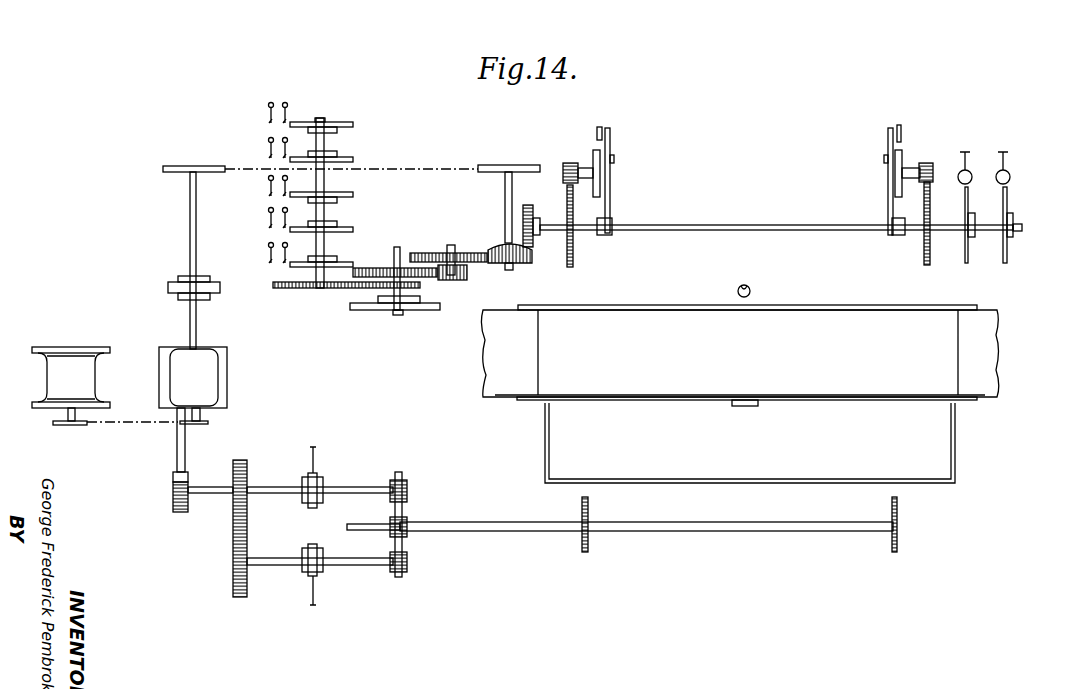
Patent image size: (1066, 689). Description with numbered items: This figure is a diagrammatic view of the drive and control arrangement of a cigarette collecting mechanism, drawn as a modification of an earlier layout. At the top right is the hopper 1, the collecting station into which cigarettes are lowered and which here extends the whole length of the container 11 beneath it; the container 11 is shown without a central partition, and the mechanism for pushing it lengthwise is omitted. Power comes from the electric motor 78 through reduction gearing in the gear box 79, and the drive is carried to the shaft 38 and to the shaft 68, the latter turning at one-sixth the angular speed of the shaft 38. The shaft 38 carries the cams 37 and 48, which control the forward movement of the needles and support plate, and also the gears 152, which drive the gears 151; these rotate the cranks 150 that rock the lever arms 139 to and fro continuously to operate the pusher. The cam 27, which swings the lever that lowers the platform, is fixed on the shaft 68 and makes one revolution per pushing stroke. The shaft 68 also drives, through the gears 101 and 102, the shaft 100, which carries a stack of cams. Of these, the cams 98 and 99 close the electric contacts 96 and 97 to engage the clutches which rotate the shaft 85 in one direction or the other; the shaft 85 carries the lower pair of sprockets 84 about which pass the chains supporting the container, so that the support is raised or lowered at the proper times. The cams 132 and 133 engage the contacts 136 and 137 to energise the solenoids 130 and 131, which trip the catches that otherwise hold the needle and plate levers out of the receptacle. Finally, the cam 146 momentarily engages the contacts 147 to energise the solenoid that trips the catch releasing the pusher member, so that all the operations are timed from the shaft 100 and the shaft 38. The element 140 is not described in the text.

The hopper 1 is at (789, 320).
The container 11 is at (580, 427).
The cam 27 is at (362, 306).
The cam 37 is at (966, 251).
The shaft 38 is at (870, 230).
The cam 48 is at (1006, 252).
The shaft 68 is at (398, 252).
The electric motor 78 is at (64, 360).
The gear box 79 is at (187, 357).
The sprockets 84 is at (581, 549).
The shaft 85 is at (660, 531).
The electric contacts 96 is at (268, 218).
The electric contacts 97 is at (268, 252).
The cam 98 is at (345, 227).
The cam 99 is at (345, 262).
The shaft 100 is at (325, 142).
The gear 101 is at (311, 289).
The gear 102 is at (420, 288).
The solenoid 130 is at (1008, 172).
The solenoid 131 is at (969, 172).
The cam 132 is at (349, 193).
The cam 133 is at (349, 158).
The contacts 136 is at (268, 185).
The contacts 137 is at (268, 144).
The lever arms 139 is at (611, 149).
The stop 140 is at (602, 132).
The cam 146 is at (340, 122).
The contacts 147 is at (268, 109).
The cranks 150 is at (594, 162).
The gears 151 is at (568, 162).
The gears 152 is at (566, 254).